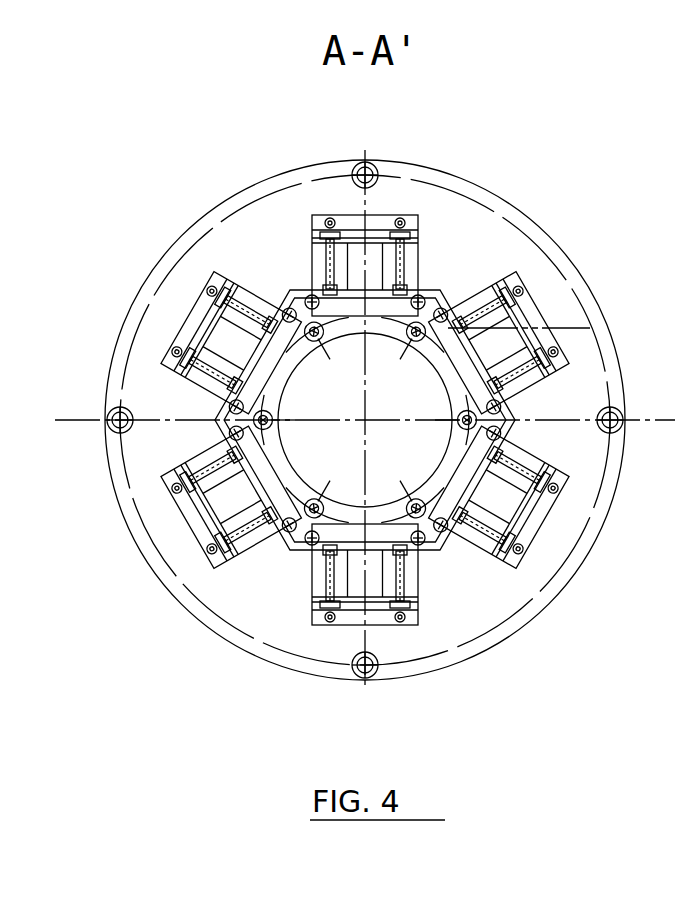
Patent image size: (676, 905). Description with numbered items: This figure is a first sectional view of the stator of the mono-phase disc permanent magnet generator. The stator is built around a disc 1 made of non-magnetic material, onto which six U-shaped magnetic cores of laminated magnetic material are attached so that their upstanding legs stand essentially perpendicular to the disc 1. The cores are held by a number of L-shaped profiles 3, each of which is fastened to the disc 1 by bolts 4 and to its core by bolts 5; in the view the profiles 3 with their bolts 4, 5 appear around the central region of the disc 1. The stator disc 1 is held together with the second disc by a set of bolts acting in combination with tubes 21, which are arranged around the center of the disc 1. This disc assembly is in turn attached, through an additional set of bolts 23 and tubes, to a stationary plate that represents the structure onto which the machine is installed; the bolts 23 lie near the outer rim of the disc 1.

The disc 1 is at (215, 203).
The L-shaped profiles 3 is at (387, 310).
The bolts 4 is at (217, 293).
The bolts 5 is at (500, 275).
The tubes 21 is at (415, 340).
The bolts 23 is at (352, 168).